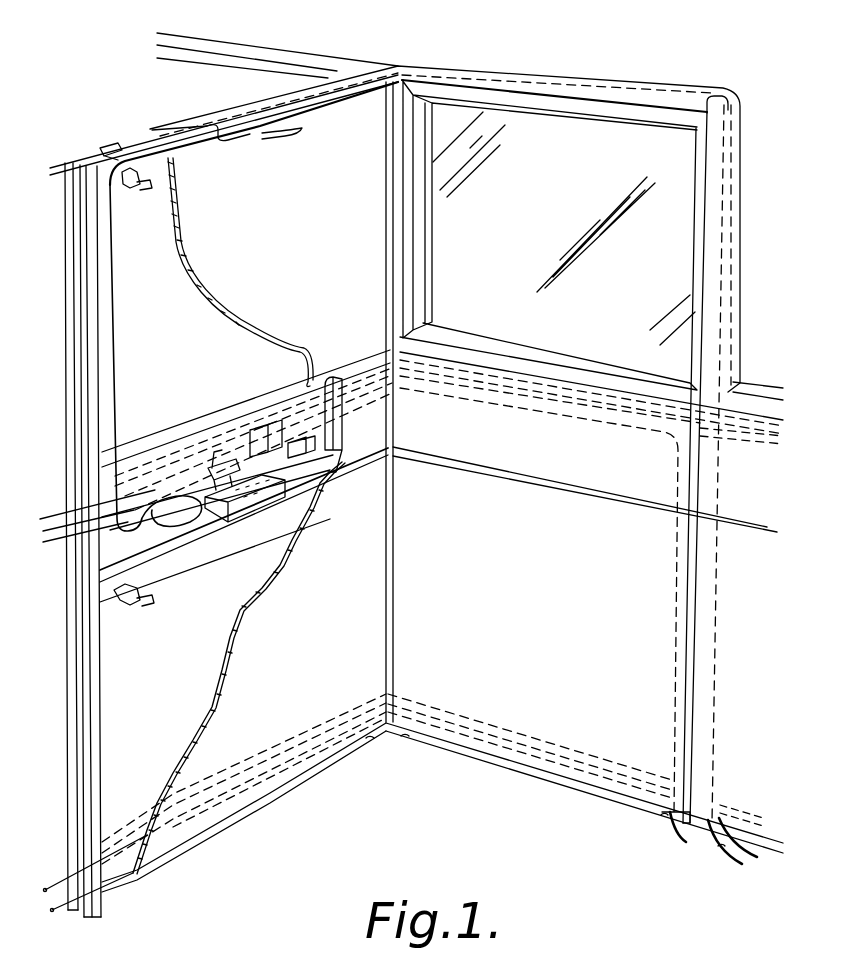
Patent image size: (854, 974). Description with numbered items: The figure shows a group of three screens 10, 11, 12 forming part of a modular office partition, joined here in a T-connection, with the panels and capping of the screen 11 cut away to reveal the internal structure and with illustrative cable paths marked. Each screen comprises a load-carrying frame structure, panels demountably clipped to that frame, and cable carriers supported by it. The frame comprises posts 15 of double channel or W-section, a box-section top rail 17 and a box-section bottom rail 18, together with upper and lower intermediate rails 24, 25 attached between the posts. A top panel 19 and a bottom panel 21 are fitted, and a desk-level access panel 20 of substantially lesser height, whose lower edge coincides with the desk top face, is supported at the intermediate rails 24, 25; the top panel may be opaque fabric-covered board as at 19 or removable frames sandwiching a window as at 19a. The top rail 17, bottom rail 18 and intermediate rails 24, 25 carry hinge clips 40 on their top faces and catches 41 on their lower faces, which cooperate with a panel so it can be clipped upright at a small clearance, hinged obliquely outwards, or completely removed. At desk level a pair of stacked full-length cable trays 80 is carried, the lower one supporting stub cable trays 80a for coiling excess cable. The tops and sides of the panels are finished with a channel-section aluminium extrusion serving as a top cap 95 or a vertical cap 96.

The screen 10 is at (264, 70).
The screen 11 is at (304, 730).
The screen 12 is at (548, 724).
The post 15 is at (70, 408).
The top rail 17 is at (107, 170).
The bottom rail 18 is at (135, 884).
The top panel 19 is at (310, 281).
The window panel 19a is at (556, 246).
The desk-level access panel 20 is at (390, 453).
The bottom panel 21 is at (340, 644).
The upper intermediate rail 24 is at (158, 432).
The lower intermediate rail 25 is at (212, 537).
The hinge clip 40 is at (113, 146).
The catch 41 is at (138, 192).
The cable tray 80 is at (272, 428).
The stub cable tray 80a is at (324, 428).
The top cap 95 is at (250, 51).
The vertical cap 96 is at (740, 190).